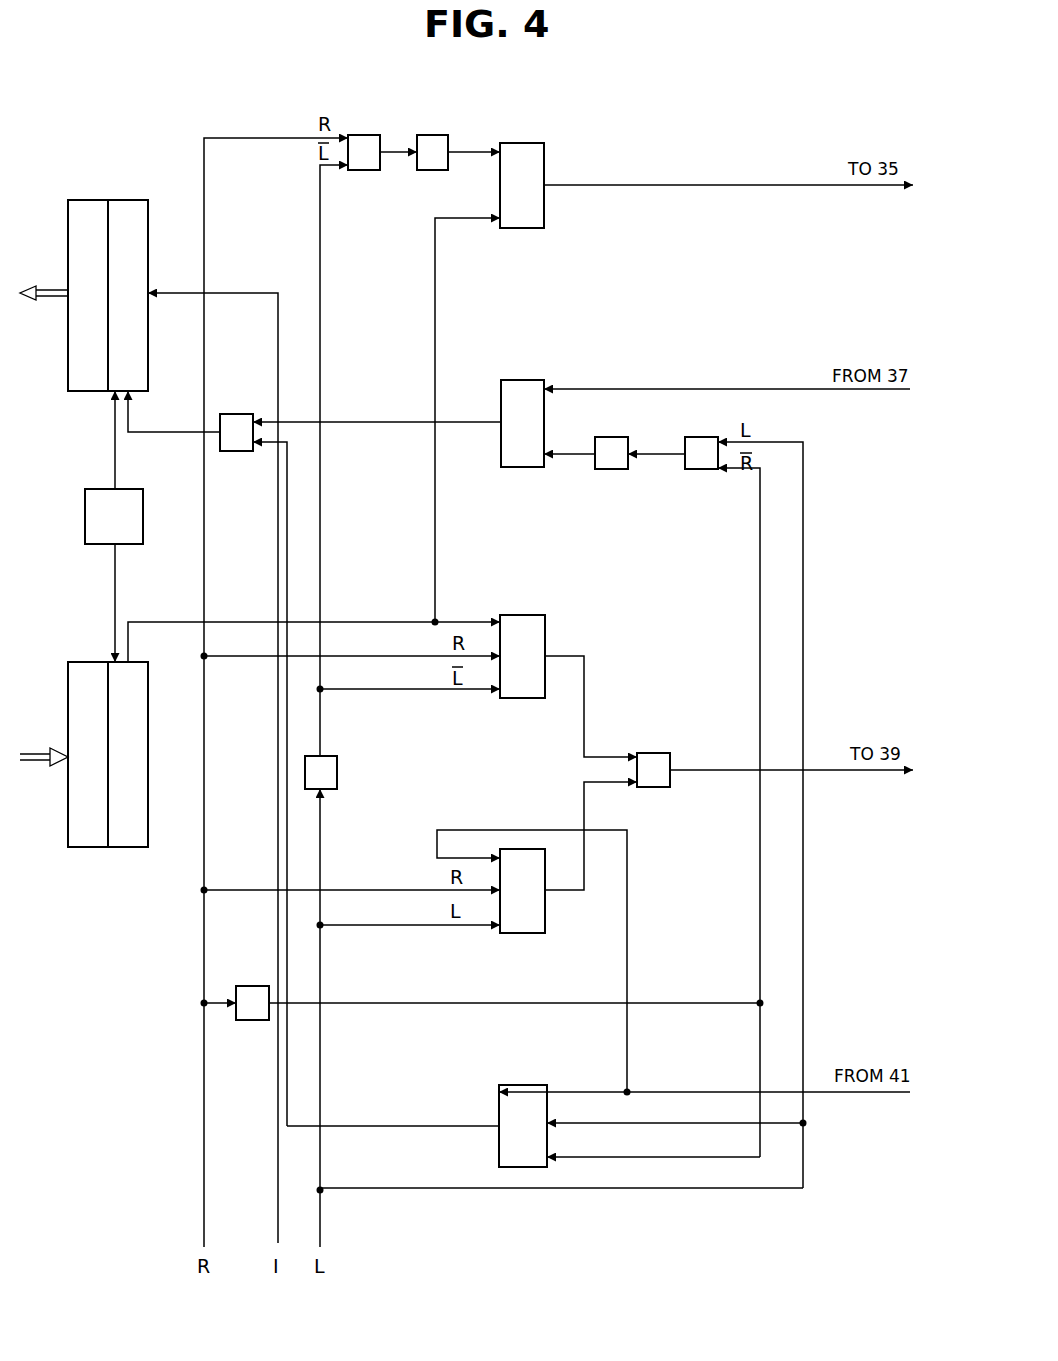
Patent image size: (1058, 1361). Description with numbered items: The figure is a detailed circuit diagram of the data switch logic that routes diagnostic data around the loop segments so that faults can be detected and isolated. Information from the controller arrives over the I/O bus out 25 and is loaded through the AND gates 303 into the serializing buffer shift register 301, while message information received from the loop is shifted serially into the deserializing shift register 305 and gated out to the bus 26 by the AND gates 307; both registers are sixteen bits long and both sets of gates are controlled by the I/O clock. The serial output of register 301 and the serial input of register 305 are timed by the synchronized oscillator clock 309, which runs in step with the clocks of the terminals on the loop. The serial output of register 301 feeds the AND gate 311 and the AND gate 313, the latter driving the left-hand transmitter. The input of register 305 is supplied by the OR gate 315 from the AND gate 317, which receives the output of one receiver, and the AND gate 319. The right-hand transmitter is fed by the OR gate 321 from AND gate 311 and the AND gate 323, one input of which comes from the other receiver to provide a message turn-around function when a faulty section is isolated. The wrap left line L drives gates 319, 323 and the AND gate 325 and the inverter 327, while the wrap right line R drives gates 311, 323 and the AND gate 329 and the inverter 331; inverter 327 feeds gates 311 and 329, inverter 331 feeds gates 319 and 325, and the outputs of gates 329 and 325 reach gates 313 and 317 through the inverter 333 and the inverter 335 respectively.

The I/O bus out 25 is at (35, 750).
The bus 26 is at (46, 288).
The serializing buffer shift register 301 is at (148, 812).
The AND gates 303 is at (70, 845).
The deserializing shift register 305 is at (148, 240).
The AND gates 307 is at (75, 201).
The synchronized oscillator clock 309 is at (143, 530).
The AND gate 311 is at (524, 595).
The AND gate 313 is at (544, 162).
The OR gate 315 is at (238, 414).
The AND gate 317 is at (518, 380).
The AND gate 319 is at (518, 1085).
The OR gate 321 is at (670, 758).
The AND gate 323 is at (547, 922).
The AND gate 325 is at (700, 470).
The inverter 327 is at (337, 771).
The AND gate 329 is at (352, 135).
The inverter 331 is at (250, 986).
The inverter 333 is at (434, 135).
The inverter 335 is at (602, 437).